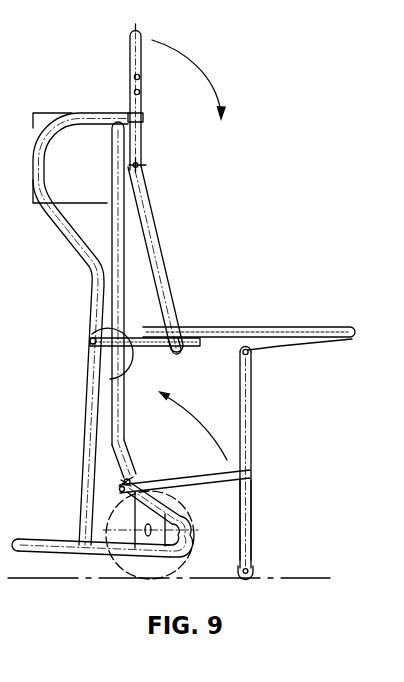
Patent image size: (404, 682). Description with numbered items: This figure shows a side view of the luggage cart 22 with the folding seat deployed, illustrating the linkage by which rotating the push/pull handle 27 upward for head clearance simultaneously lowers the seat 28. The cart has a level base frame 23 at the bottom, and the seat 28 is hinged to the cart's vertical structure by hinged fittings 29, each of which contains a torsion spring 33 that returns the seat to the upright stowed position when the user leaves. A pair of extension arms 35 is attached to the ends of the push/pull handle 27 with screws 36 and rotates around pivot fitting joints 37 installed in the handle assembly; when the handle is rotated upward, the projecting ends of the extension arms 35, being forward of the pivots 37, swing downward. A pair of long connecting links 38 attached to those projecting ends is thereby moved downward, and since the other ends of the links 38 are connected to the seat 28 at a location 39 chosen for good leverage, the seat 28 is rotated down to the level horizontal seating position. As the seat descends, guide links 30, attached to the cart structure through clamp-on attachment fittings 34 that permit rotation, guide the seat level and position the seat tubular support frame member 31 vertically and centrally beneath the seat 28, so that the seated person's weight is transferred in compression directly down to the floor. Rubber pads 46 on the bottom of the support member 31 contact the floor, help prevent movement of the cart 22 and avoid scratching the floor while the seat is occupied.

The luggage cart 22 is at (90, 418).
The base frame 23 is at (36, 540).
The push/pull handle 27 is at (150, 35).
The seat 28 is at (293, 327).
The hinged fittings 29 is at (93, 330).
The guide links 30 is at (207, 466).
The seat tubular support frame member 31 is at (252, 510).
The torsion spring 33 is at (97, 372).
The clamp-on attachment fittings 34 is at (130, 480).
The extension arms 35 is at (130, 62).
The screws 36 is at (140, 93).
The pivot fitting joints 37 is at (143, 118).
The long connecting links 38 is at (158, 258).
The attachment location 39 is at (171, 353).
The rubber pads 46 is at (253, 570).